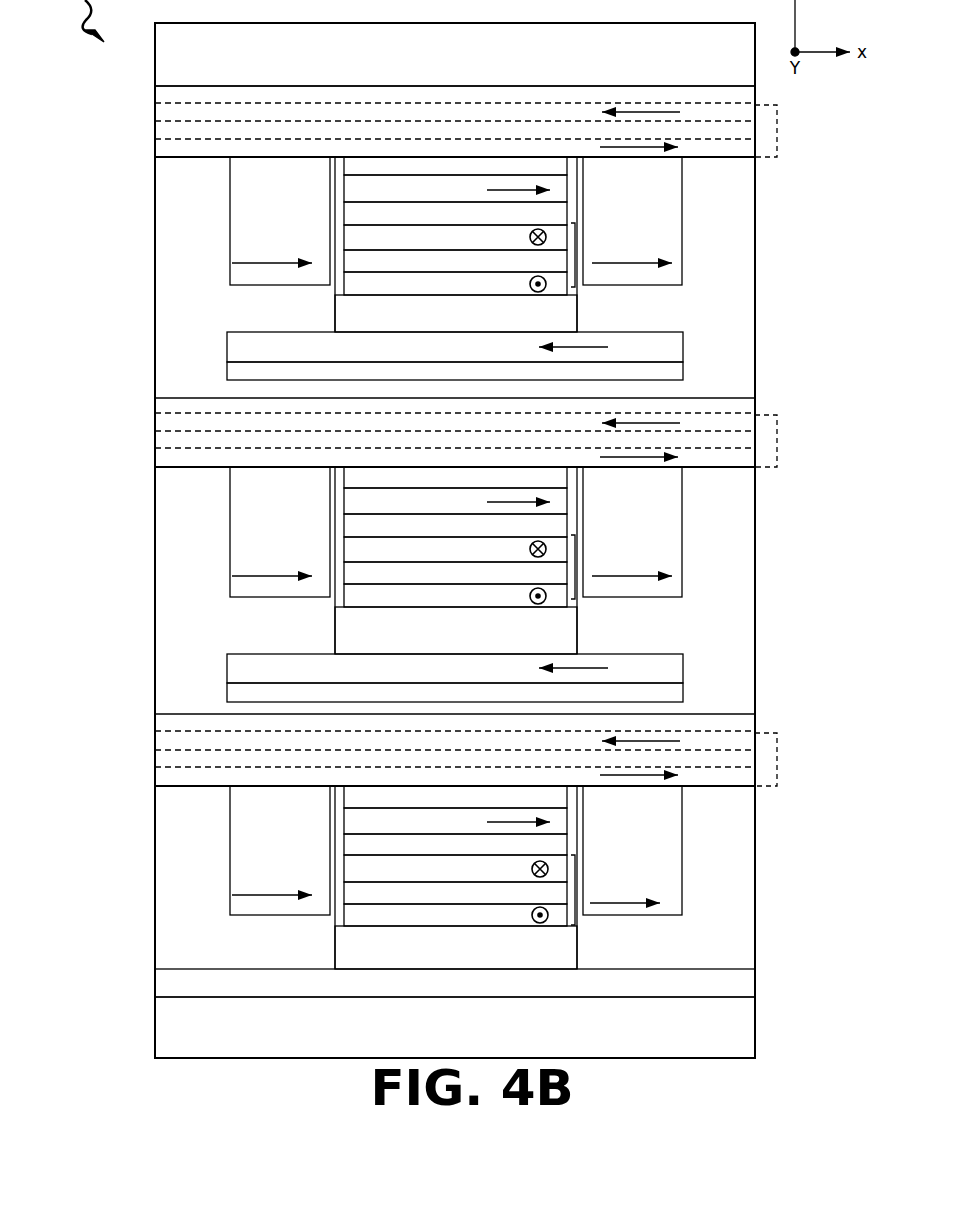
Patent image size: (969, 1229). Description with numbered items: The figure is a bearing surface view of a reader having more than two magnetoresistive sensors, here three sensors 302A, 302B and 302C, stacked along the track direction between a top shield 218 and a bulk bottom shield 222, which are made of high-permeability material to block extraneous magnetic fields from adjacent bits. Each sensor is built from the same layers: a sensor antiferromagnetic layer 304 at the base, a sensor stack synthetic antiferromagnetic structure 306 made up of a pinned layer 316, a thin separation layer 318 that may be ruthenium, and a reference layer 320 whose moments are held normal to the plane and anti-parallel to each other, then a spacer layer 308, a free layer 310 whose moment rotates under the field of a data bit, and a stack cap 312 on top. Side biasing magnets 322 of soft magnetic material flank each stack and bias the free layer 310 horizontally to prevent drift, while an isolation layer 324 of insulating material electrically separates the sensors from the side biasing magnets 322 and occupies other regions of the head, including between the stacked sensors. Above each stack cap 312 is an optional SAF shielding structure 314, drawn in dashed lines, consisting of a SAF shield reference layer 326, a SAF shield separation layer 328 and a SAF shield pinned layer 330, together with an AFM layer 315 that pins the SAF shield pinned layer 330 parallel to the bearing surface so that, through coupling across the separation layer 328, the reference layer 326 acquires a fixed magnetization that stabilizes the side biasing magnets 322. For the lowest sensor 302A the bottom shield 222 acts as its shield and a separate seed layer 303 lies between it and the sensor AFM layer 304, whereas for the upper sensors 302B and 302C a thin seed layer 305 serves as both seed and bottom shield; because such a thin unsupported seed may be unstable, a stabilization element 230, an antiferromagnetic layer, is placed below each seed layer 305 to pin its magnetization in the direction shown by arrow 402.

The top shield 218 is at (524, 64).
The AFM layer 315 is at (529, 101).
The SAF shield pinned layer 330 is at (529, 119).
The SAF shield separation layer 328 is at (529, 136).
The SAF shield reference layer 326 is at (529, 153).
The SAF shielding structure 314 is at (777, 130).
The stack cap 312 is at (383, 174).
The free layer 310 is at (383, 196).
The spacer layer 308 is at (383, 220).
The reference layer 320 is at (383, 245).
The separation layer 318 is at (383, 268).
The pinned layer 316 is at (383, 291).
The side biasing magnets 322 is at (456, 536).
The sensor antiferromagnetic layer 304 is at (517, 321).
The seed layer 305 is at (474, 354).
The stabilization element 230 is at (474, 376).
The arrow 402 is at (595, 347).
The magnetoresistive sensor 302C is at (776, 205).
The magnetoresistive sensor 302B is at (776, 515).
The magnetoresistive sensor 302A is at (774, 804).
The sensor stack synthetic antiferromagnetic structure 306 is at (575, 258).
The isolation layer 324 is at (336, 166).
The seed layer 303 is at (462, 990).
The bottom shield 222 is at (490, 1033).